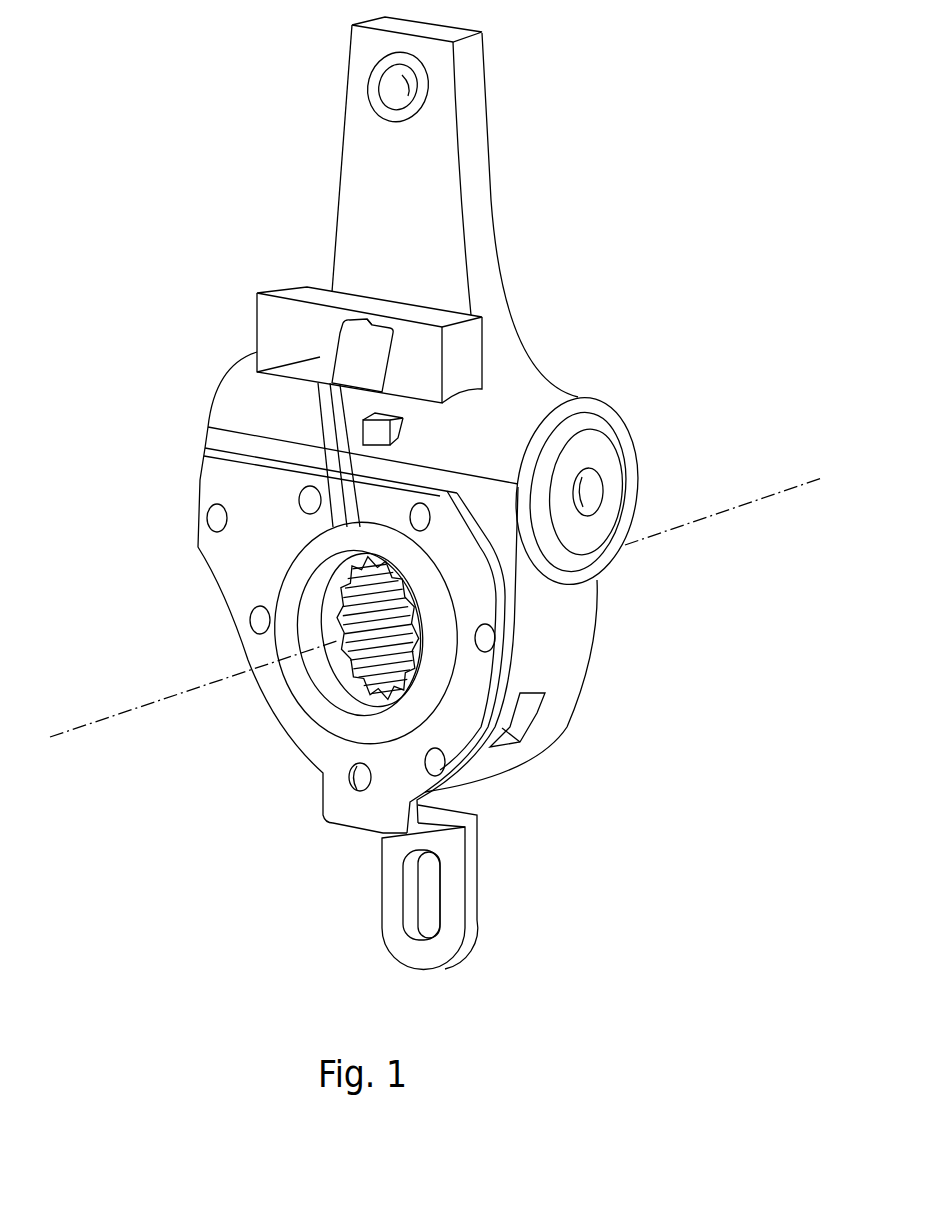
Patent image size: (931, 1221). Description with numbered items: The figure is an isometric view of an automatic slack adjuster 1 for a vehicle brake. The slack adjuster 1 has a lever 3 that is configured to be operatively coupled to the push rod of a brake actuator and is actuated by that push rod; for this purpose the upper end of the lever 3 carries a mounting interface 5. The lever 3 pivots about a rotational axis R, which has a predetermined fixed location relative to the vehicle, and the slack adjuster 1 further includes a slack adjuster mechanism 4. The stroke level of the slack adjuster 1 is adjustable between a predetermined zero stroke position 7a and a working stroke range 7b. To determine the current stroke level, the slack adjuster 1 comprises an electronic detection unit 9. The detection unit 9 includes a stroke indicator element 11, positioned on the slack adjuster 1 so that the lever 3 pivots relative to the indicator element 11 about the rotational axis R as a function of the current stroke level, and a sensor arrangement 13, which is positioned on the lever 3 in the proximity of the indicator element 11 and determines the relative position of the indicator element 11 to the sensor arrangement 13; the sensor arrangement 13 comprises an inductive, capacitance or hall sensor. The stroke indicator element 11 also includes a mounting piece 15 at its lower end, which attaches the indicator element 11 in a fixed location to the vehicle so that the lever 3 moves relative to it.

The automatic slack adjuster 1 is at (173, 153).
The lever 3 is at (490, 215).
The slack adjuster mechanism 4 is at (650, 513).
The mounting interface 5 is at (402, 83).
The predetermined zero stroke position 7a is at (320, 357).
The working stroke range 7b is at (372, 307).
The electronic detection unit 9 is at (458, 350).
The stroke indicator element 11 is at (363, 475).
The sensor arrangement 13 is at (425, 340).
The mounting piece 15 is at (497, 907).
The rotational axis R is at (785, 487).